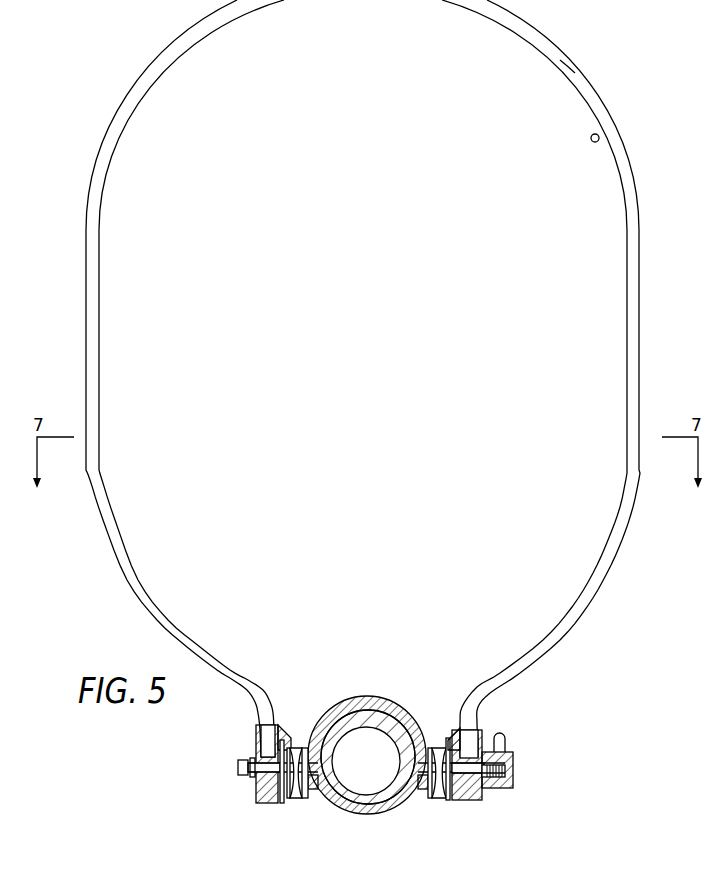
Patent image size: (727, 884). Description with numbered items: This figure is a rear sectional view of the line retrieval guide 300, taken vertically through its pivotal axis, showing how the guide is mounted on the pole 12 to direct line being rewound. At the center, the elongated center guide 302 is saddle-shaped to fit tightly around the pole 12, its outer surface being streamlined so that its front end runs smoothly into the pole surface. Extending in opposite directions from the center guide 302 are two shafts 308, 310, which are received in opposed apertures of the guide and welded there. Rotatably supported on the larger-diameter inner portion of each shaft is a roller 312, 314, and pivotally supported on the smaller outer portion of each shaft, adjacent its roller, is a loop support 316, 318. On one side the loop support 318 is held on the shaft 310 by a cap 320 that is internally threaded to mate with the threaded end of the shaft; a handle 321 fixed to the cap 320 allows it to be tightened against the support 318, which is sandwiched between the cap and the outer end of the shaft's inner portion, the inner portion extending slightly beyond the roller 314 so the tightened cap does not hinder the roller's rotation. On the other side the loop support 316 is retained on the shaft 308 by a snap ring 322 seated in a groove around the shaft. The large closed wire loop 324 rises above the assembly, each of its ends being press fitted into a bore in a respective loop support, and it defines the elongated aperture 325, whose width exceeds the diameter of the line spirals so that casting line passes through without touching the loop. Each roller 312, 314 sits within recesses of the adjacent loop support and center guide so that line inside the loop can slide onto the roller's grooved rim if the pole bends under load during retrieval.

The line retrieval guide 300 is at (144, 54).
The closed wire loop 324 is at (567, 63).
The elongated aperture 325 is at (599, 137).
The center guide 302 is at (366, 697).
The pole 12 is at (378, 813).
The loop support 316 is at (268, 803).
The snap ring 322 is at (253, 758).
The shaft 308 is at (238, 767).
The roller 312 is at (298, 800).
The roller 314 is at (442, 798).
The loop support 318 is at (470, 802).
The cap 320 is at (515, 760).
The shaft 310 is at (500, 789).
The handle 321 is at (505, 737).